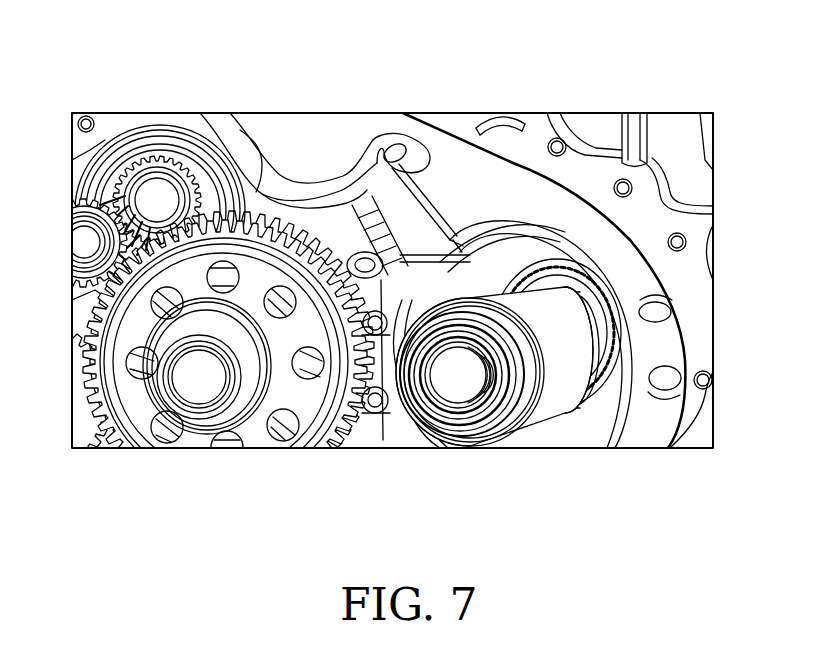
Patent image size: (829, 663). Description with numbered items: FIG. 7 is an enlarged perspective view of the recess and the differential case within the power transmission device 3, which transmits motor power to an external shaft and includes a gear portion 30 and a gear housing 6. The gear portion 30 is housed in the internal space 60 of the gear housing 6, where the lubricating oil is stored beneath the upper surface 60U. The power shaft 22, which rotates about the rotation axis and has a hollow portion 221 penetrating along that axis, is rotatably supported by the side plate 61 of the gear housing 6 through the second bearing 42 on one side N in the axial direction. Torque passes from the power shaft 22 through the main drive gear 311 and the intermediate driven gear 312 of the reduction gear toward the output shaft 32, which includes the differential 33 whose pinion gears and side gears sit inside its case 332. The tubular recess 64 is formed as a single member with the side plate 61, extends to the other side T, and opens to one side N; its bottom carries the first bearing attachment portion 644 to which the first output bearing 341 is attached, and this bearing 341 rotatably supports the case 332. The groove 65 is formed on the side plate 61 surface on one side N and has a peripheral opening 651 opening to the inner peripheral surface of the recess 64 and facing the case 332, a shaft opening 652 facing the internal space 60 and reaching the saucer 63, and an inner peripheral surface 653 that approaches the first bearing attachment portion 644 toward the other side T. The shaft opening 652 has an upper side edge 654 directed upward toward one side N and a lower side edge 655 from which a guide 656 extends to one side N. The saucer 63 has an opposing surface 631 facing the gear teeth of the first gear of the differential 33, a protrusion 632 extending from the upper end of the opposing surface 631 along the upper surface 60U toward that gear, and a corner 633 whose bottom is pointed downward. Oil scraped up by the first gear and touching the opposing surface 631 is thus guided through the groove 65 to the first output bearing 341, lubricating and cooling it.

The power transmission device 3 is at (70, 307).
The gear portion 30 is at (72, 347).
The intermediate driven gear 312 is at (190, 440).
The main drive gear 311 is at (85, 186).
The second bearing 42 is at (100, 163).
The power shaft 22 is at (78, 215).
The hollow portion 221 is at (82, 243).
The gear housing 6 is at (690, 140).
The internal space 60 is at (497, 183).
The upper surface 60U is at (425, 210).
The side plate 61 is at (600, 207).
The recess 64 is at (686, 242).
The first bearing attachment portion 644 is at (660, 330).
The peripheral opening 651 is at (593, 187).
The shaft opening 652 is at (385, 425).
The inner peripheral surface 653 is at (415, 195).
The upper side edge 654 is at (445, 230).
The lower side edge 655 is at (470, 140).
The guide 656 is at (385, 145).
The saucer 63 is at (263, 113).
The opposing surface 631 is at (352, 245).
The protrusion 632 is at (405, 200).
The corner 633 is at (305, 180).
The first output bearing 341 is at (590, 358).
The case 332 is at (650, 392).
The differential 33 is at (553, 405).
The output shaft 32 is at (545, 410).
The groove 65 is at (447, 420).